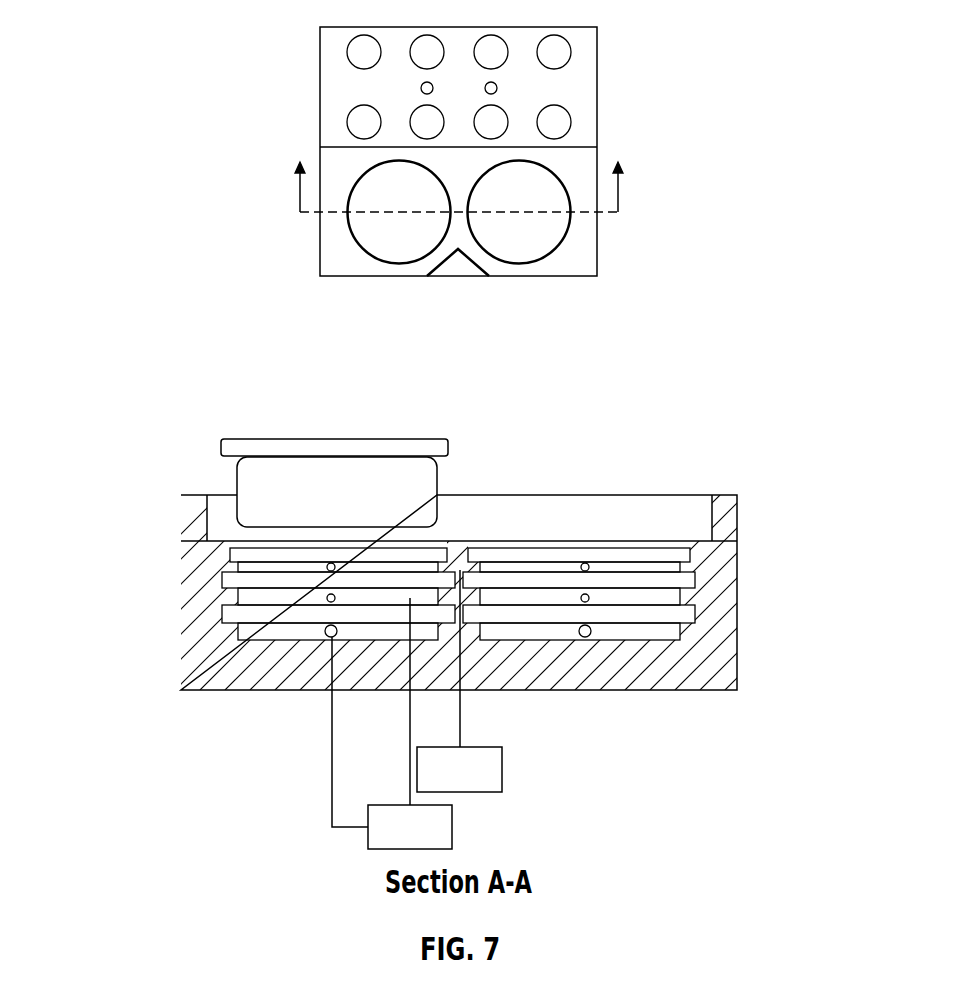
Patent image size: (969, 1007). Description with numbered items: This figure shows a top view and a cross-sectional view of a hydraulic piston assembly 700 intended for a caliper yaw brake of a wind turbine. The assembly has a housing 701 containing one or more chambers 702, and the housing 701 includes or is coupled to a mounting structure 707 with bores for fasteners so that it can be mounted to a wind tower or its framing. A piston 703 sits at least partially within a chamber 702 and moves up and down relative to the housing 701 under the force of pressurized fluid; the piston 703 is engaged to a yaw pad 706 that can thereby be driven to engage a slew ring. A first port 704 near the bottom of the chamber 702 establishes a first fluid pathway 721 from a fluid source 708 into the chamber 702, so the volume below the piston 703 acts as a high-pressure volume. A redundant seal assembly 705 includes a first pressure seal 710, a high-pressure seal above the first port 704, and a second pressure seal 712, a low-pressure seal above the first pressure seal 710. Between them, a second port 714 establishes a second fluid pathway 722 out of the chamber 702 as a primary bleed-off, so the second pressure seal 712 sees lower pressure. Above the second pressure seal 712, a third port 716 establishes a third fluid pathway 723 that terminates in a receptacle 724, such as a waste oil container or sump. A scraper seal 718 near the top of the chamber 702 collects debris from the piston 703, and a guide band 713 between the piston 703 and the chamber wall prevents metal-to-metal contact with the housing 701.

The hydraulic piston assembly 700 is at (472, 426).
The housing 701 is at (330, 246).
The chamber 702 is at (372, 226).
The piston 703 is at (358, 506).
The first port 704 is at (325, 629).
The redundant seal assembly 705 is at (494, 566).
The yaw pad 706 is at (232, 438).
The mounting structure 707 is at (590, 93).
The fluid source 708 is at (431, 844).
The first pressure seal 710 is at (697, 615).
The second pressure seal 712 is at (697, 579).
The guide band 713 is at (703, 628).
The second port 714 is at (327, 597).
The third port 716 is at (327, 566).
The scraper seal 718 is at (692, 553).
The first fluid pathway 721 is at (332, 800).
The second fluid pathway 722 is at (410, 748).
The third fluid pathway 723 is at (460, 710).
The receptacle 724 is at (481, 786).